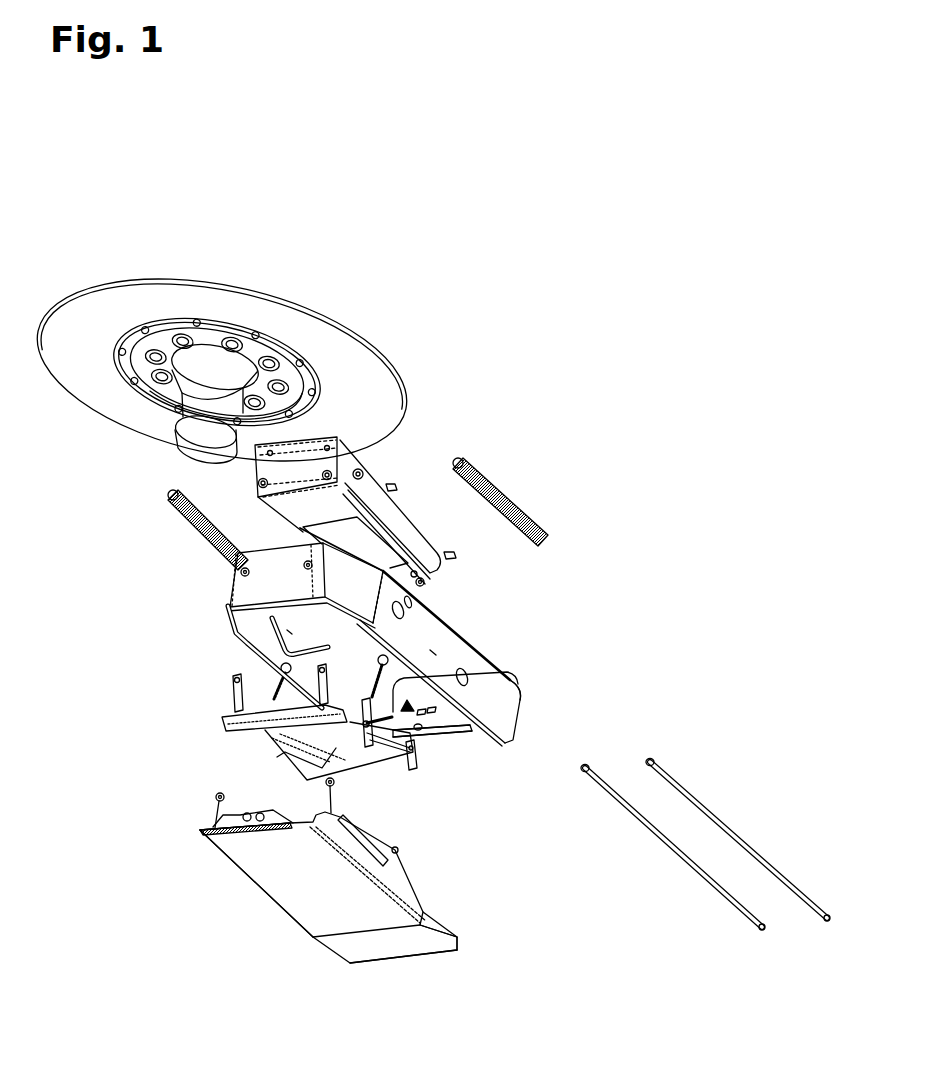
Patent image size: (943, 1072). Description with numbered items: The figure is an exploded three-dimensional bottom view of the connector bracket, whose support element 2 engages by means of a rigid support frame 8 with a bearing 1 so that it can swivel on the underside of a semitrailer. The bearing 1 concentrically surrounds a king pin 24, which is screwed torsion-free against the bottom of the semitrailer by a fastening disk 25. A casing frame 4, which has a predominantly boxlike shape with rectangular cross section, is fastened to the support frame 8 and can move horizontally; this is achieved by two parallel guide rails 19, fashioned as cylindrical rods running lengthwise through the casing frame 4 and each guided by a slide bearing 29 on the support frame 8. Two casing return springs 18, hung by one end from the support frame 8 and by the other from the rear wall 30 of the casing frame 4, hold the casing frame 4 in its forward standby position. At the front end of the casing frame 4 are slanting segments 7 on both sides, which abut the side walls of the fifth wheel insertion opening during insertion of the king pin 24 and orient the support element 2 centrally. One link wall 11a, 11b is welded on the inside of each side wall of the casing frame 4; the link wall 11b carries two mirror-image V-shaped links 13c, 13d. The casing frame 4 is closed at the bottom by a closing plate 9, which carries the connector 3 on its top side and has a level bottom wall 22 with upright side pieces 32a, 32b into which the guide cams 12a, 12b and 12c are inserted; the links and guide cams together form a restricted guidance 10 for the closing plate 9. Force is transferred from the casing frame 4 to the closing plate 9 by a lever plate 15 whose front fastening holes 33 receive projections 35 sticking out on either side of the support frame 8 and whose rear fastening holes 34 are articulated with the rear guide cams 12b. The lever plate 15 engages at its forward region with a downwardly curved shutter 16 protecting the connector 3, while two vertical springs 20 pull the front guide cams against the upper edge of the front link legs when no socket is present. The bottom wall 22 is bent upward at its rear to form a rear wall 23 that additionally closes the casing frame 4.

The bearing 1 is at (277, 317).
The support element 2 is at (622, 646).
The connector 3 is at (267, 813).
The casing frame 4 is at (410, 637).
The slanting segment 7 is at (180, 587).
The support frame 8 is at (385, 508).
The closing plate 9 is at (348, 854).
The restricted guidance 10 is at (513, 683).
The link wall 11a is at (470, 730).
The link wall 11b is at (422, 728).
The front guide cam 12a is at (332, 783).
The rear guide cam 12b is at (397, 850).
The front guide cam 12c is at (213, 800).
The link 13c is at (287, 630).
The link 13d is at (430, 650).
The lever plate 15 is at (339, 739).
The shutter 16 is at (223, 723).
The casing return spring 18 is at (500, 492).
The guide rail 19 is at (746, 840).
The vertical spring 20 is at (383, 660).
The bottom wall 22 is at (278, 912).
The rear wall 23 is at (460, 933).
The king pin 24 is at (102, 357).
The fastening disk 25 is at (207, 337).
The slide bearing 29 is at (262, 473).
The rear wall 30 is at (468, 727).
The side piece 32a is at (383, 877).
The side piece 32b is at (227, 818).
The front fastening hole 33 is at (300, 667).
The rear fastening hole 34 is at (412, 745).
The projection 35 is at (358, 473).